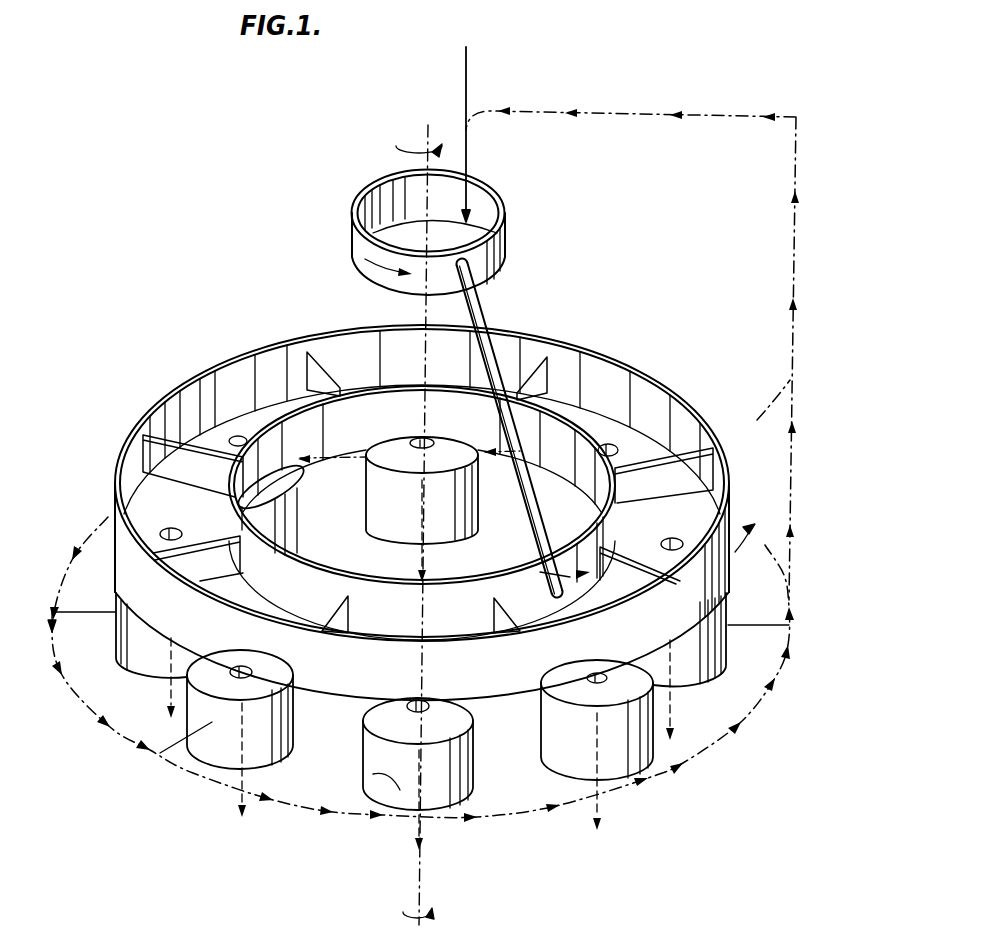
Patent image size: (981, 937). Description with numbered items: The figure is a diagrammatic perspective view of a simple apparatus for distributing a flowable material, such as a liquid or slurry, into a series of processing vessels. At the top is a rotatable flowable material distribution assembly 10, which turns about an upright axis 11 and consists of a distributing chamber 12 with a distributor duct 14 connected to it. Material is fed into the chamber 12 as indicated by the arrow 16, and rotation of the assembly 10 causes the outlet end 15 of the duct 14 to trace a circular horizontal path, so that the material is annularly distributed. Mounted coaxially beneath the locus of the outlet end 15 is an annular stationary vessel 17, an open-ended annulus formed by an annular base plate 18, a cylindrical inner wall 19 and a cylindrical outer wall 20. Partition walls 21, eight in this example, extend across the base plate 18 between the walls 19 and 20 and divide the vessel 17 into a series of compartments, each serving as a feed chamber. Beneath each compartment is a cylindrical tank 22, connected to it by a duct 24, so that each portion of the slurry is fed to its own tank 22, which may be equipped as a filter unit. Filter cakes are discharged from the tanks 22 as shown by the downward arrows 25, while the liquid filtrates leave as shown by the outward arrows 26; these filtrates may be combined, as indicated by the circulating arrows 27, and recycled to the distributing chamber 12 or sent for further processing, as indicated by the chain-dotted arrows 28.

The flowable material distribution assembly 10 is at (490, 303).
The upright axis 11 is at (404, 148).
The distributing chamber 12 is at (385, 200).
The distributor duct 14 is at (518, 330).
The outlet end 15 is at (540, 572).
The arrow indicating feed of flowable material 16 is at (467, 70).
The annular stationary vessel 17 is at (236, 350).
The annular base plate 18 is at (598, 418).
The cylindrical inner wall 19 is at (358, 415).
The cylindrical outer wall 20 is at (195, 387).
The partition walls 21 is at (540, 378).
The cylindrical tanks 22 is at (383, 513).
The duct 24 is at (617, 445).
The downward arrows 25 is at (170, 695).
The outward arrows 26 is at (83, 610).
The circulating arrows 27 is at (128, 725).
The chain-dotted arrows 28 is at (688, 114).